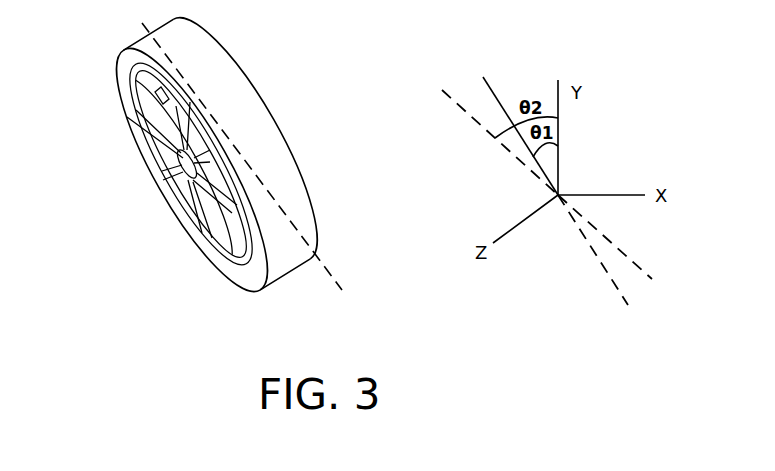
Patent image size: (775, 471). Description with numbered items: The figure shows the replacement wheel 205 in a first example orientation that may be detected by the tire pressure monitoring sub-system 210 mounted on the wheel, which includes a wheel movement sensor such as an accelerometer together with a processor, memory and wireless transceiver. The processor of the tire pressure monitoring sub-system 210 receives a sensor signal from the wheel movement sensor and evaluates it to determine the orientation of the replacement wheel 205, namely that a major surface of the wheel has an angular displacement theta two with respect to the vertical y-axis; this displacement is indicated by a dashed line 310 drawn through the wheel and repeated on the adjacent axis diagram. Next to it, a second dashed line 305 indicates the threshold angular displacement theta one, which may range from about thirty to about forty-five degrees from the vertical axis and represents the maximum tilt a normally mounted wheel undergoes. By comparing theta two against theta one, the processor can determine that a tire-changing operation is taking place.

The replacement wheel 205 is at (120, 207).
The tire pressure monitoring sub-system 210 is at (150, 100).
The dashed line 305 is at (348, 288).
The dashed line 310 is at (648, 275).